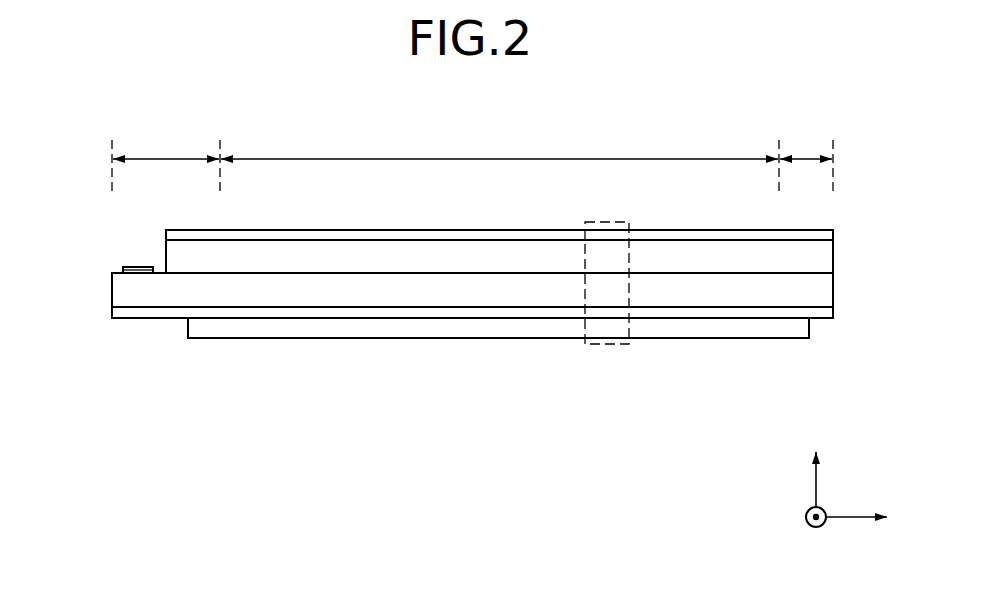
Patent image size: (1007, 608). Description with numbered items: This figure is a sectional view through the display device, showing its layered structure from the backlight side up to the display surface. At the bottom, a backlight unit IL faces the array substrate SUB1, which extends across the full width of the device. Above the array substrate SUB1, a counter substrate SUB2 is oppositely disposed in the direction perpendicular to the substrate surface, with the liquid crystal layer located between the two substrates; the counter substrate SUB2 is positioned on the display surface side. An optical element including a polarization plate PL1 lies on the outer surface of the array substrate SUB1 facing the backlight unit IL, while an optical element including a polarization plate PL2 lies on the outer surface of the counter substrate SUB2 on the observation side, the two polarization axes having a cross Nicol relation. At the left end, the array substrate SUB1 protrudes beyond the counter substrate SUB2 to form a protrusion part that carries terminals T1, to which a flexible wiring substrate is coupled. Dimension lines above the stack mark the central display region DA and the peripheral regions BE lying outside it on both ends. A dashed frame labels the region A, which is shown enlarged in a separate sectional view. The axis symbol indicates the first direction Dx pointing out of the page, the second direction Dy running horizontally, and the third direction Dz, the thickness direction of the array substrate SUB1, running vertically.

The polarization plate PL2 is at (165, 234).
The counter substrate SUB2 is at (180, 255).
The terminal T1 is at (138, 267).
The array substrate SUB1 is at (123, 293).
The polarization plate PL1 is at (108, 312).
The backlight unit IL is at (809, 322).
The peripheral region BE is at (472, 145).
The display region DA is at (499, 145).
The region A is at (605, 347).
The first direction Dx is at (802, 532).
The second direction Dy is at (875, 519).
The third direction Dz is at (817, 463).